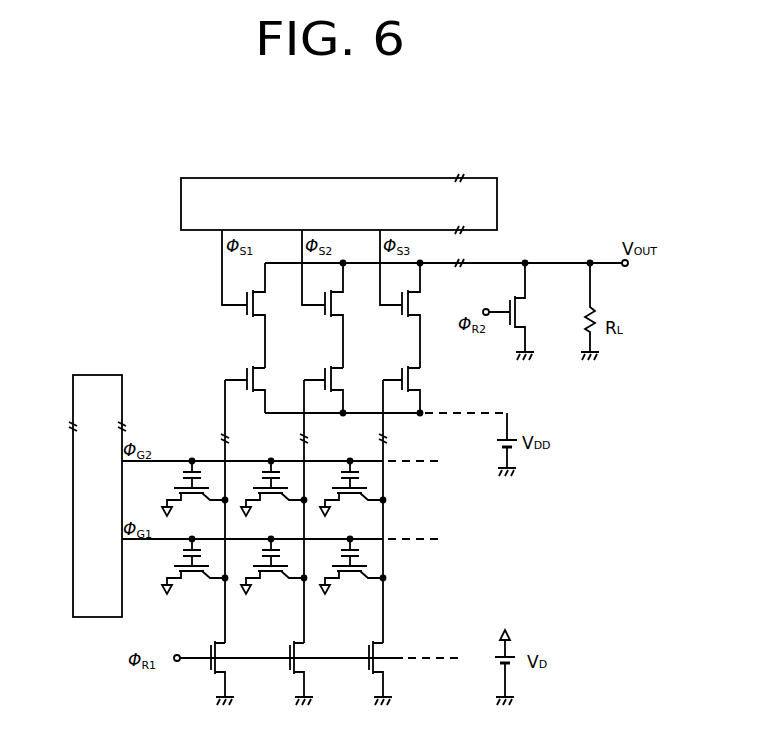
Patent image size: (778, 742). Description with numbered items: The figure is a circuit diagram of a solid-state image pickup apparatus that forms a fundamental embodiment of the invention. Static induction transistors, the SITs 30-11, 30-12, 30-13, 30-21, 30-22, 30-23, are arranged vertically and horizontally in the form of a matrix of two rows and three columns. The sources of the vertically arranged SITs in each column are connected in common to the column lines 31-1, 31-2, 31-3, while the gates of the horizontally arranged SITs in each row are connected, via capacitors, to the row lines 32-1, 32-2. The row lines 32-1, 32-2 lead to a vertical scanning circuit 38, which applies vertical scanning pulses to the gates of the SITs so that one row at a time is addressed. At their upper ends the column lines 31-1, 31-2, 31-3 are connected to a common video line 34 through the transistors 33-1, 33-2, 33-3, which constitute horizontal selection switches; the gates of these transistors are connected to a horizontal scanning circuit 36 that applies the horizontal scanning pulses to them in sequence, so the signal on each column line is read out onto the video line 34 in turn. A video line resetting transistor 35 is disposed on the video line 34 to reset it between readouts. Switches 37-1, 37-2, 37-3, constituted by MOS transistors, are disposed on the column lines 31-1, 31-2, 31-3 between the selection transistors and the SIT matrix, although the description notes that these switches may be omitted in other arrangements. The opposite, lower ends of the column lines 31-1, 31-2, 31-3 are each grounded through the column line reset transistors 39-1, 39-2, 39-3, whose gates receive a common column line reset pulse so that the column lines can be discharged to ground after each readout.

The horizontal scanning circuit 36 is at (423, 178).
The video line 34 is at (505, 263).
The video line resetting transistor 35 is at (525, 310).
The horizontal selection transistor 33-1 is at (282, 307).
The horizontal selection transistor 33-2 is at (360, 307).
The horizontal selection transistor 33-3 is at (437, 307).
The switch 37-1 is at (262, 378).
The switch 37-2 is at (340, 378).
The switch 37-3 is at (417, 378).
The column line 31-1 is at (227, 459).
The column line 31-2 is at (306, 470).
The column line 31-3 is at (385, 478).
The row line 32-1 is at (158, 537).
The row line 32-2 is at (166, 459).
The vertical scanning circuit 38 is at (73, 543).
The SIT 30-11 is at (194, 577).
The SIT 30-12 is at (273, 577).
The SIT 30-13 is at (352, 577).
The SIT 30-21 is at (194, 497).
The SIT 30-22 is at (273, 497).
The SIT 30-23 is at (352, 497).
The column line reset transistor 39-1 is at (209, 671).
The column line reset transistor 39-2 is at (288, 671).
The column line reset transistor 39-3 is at (367, 671).